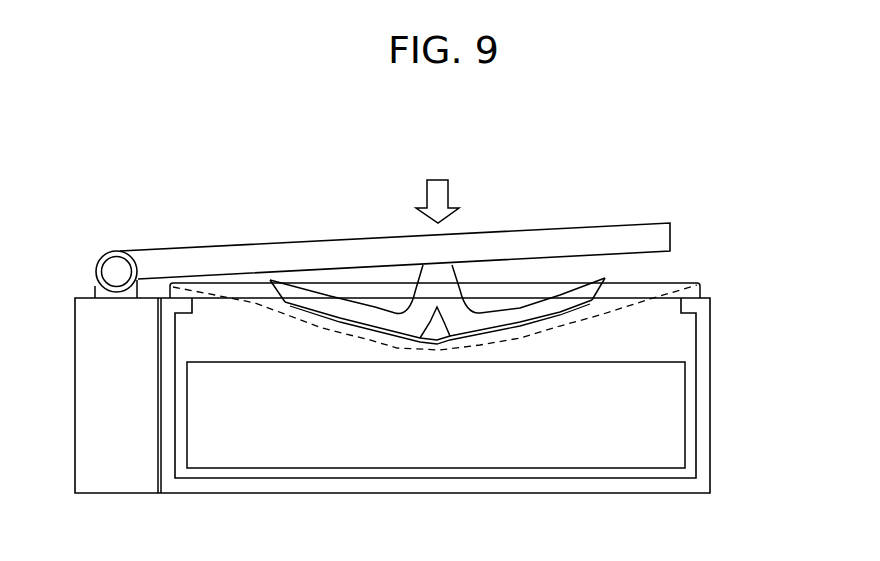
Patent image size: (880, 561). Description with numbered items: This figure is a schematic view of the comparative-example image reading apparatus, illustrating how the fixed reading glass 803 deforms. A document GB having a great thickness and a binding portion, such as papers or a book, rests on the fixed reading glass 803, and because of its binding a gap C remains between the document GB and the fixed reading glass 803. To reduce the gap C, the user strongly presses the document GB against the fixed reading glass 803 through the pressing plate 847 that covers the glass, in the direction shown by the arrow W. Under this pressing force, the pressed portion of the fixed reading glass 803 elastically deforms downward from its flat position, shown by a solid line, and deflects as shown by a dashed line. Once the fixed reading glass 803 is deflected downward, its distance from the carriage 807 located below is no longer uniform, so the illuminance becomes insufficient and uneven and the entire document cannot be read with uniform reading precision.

The pressing plate 847 is at (648, 223).
The fixed reading glass 803 is at (622, 306).
The carriage 807 is at (691, 458).
The arrow W is at (437, 189).
The gap C is at (427, 322).
The document GB is at (453, 263).